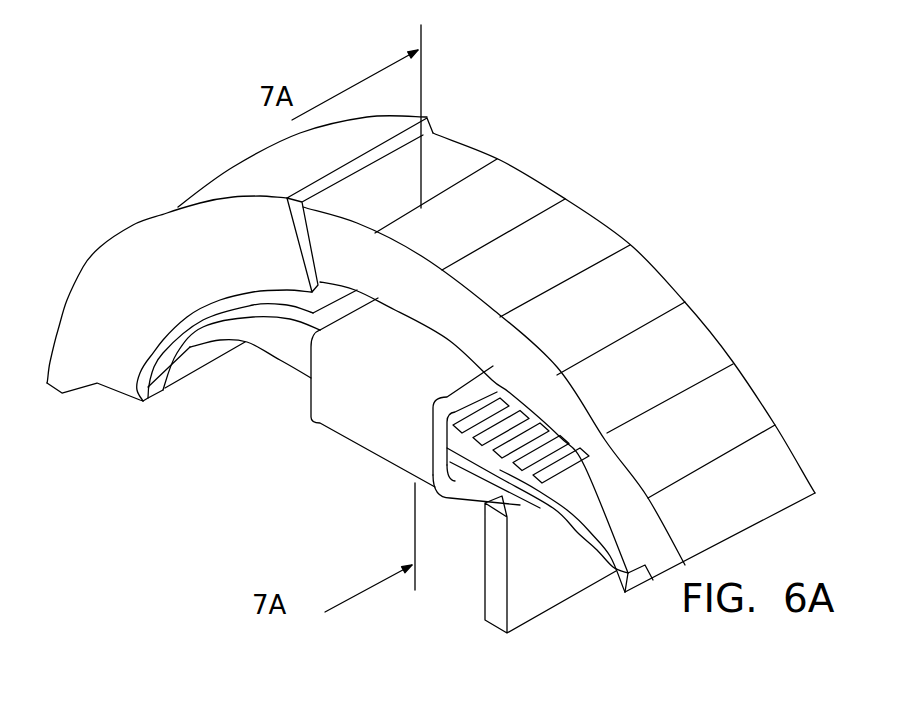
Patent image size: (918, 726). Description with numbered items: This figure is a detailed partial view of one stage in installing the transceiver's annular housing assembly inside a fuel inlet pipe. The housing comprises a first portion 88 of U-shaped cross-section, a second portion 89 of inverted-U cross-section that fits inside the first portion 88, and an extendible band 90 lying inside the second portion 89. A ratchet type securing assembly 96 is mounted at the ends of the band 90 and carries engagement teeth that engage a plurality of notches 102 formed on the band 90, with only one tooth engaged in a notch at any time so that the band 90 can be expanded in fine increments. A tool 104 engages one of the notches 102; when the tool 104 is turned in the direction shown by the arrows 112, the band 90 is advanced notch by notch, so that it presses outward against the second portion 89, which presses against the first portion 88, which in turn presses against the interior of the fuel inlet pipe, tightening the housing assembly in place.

The first portion 88 is at (178, 210).
The second portion 89 is at (588, 227).
The extendible band 90 is at (582, 518).
The ratchet type securing assembly 96 is at (375, 427).
The notches 102 is at (533, 430).
The tool 104 is at (527, 613).
The arrows 112 is at (458, 518).